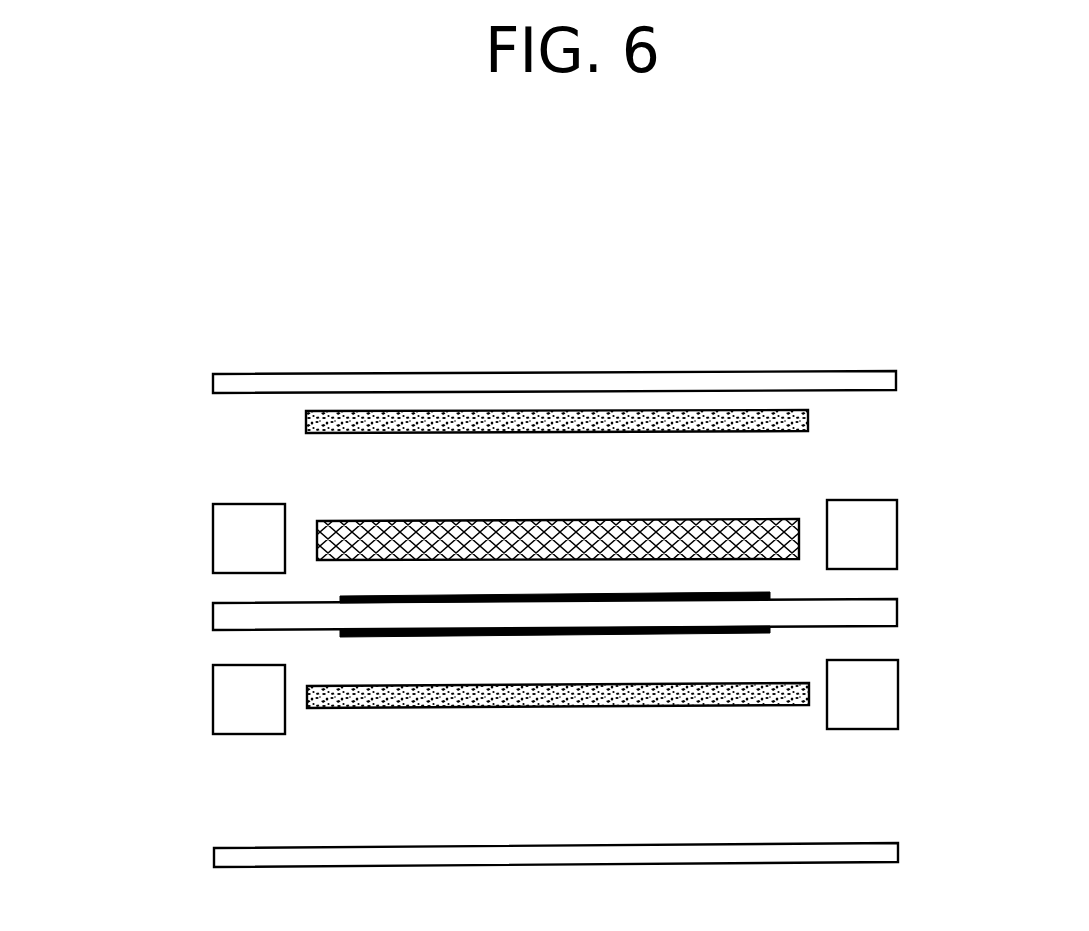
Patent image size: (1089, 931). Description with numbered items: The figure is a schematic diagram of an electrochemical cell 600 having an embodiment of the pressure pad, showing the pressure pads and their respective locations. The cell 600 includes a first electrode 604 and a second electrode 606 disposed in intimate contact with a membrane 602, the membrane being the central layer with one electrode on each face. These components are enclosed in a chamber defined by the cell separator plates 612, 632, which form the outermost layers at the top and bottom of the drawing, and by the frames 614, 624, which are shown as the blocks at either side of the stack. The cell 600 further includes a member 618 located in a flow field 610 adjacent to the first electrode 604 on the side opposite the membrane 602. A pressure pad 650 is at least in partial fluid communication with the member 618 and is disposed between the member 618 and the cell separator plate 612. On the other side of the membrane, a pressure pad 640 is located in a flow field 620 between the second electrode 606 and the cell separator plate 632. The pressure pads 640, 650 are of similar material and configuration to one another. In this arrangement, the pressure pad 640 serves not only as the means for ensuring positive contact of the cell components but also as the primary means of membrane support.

The cell 600 is at (236, 336).
The membrane 602 is at (897, 617).
The first electrode 604 is at (770, 596).
The second electrode 606 is at (770, 630).
The flow field 610 is at (588, 500).
The cell separator plate 612 is at (896, 380).
The frame 614 is at (897, 513).
The member 618 is at (632, 520).
The flow field 620 is at (600, 799).
The frame 624 is at (898, 717).
The cell separator plate 632 is at (898, 853).
The pressure pad 640 is at (588, 684).
The pressure pad 650 is at (780, 432).